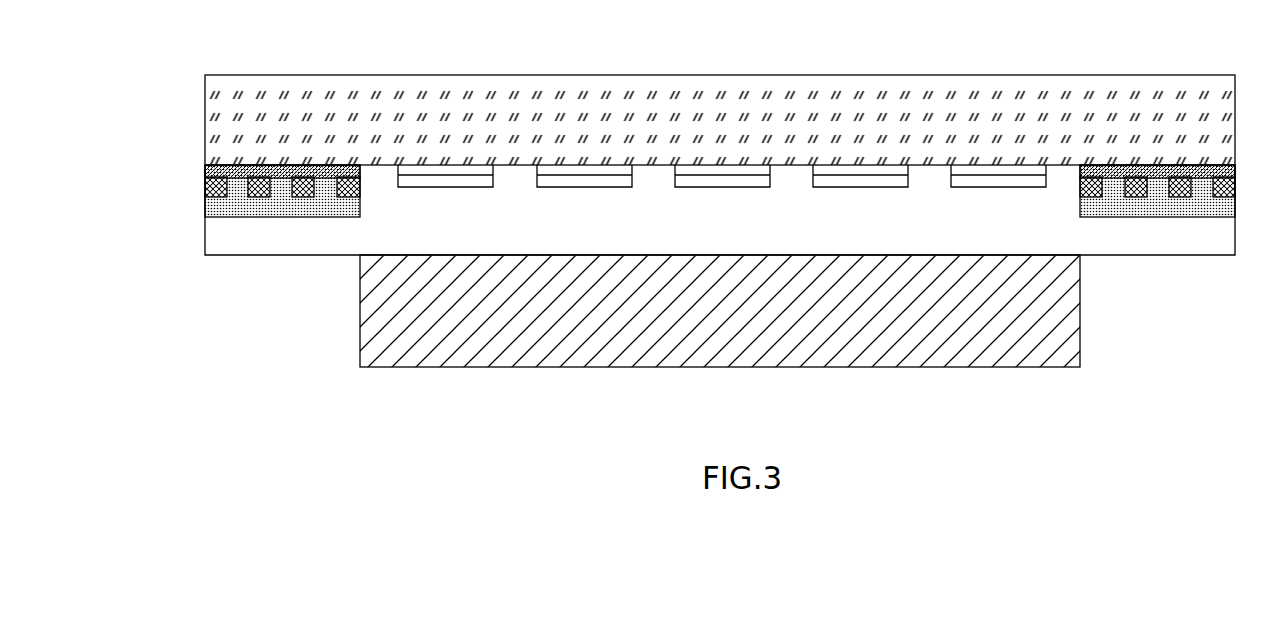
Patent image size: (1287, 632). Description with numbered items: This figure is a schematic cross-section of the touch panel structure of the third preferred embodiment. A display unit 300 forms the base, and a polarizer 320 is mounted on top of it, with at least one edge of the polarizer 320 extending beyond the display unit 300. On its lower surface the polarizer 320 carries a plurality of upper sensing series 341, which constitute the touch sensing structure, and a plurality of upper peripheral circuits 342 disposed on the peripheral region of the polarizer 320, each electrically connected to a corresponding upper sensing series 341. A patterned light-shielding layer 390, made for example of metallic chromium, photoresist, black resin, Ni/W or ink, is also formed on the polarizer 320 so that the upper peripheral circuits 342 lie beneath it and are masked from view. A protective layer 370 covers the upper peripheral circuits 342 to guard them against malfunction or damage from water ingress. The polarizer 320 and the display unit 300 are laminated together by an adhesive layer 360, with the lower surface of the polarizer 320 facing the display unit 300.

The display unit 300 is at (627, 318).
The polarizer 320 is at (600, 123).
The upper sensing series 341 is at (433, 175).
The upper peripheral circuits 342 is at (297, 192).
The adhesive layer 360 is at (778, 232).
The protective layer 370 is at (1118, 203).
The patterned light-shielding layer 390 is at (1153, 165).